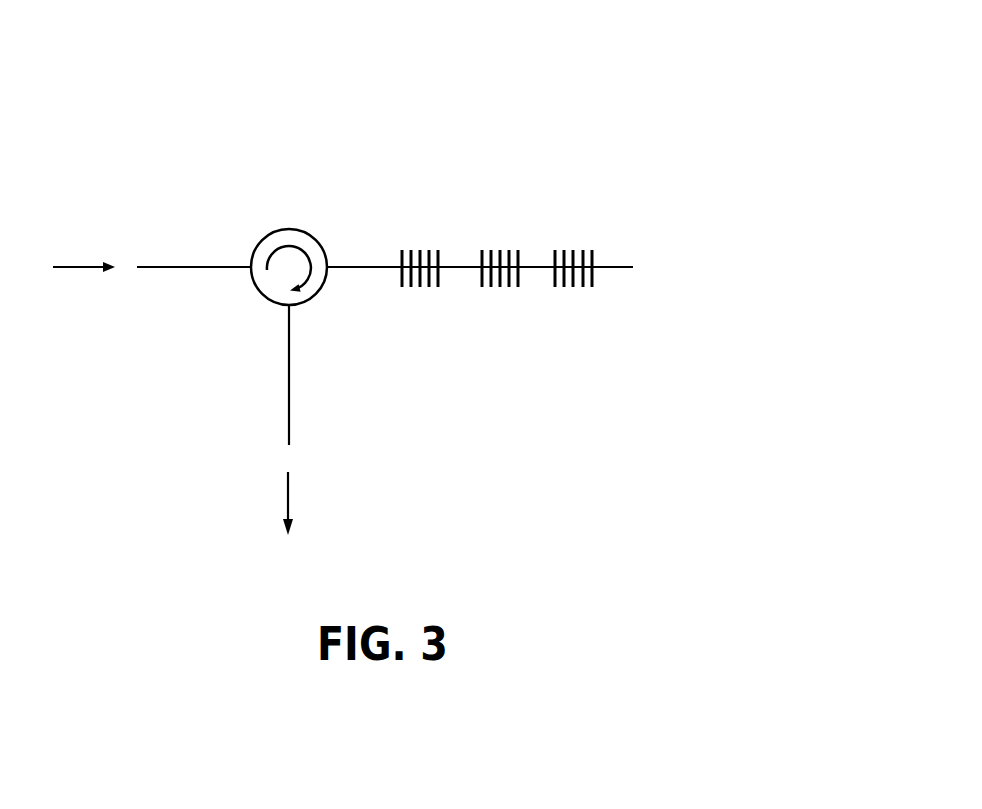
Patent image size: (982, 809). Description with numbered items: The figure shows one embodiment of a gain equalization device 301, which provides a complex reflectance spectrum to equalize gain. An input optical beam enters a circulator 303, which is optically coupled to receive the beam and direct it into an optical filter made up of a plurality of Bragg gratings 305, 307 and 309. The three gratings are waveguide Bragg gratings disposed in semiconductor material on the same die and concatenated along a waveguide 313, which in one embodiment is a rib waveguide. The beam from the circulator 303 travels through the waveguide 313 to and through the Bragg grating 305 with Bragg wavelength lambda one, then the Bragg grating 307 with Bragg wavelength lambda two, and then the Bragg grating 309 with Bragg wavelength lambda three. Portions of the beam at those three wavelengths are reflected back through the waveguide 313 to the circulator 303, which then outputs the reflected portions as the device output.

The gain equalization device 301 is at (712, 74).
The circulator 303 is at (295, 230).
The Bragg grating 305 is at (415, 240).
The Bragg grating 307 is at (497, 240).
The Bragg grating 309 is at (578, 240).
The waveguide 313 is at (382, 268).